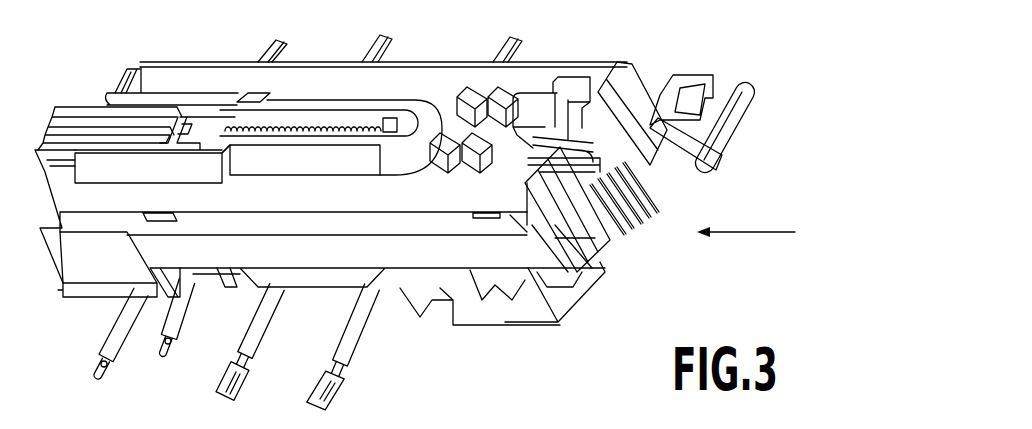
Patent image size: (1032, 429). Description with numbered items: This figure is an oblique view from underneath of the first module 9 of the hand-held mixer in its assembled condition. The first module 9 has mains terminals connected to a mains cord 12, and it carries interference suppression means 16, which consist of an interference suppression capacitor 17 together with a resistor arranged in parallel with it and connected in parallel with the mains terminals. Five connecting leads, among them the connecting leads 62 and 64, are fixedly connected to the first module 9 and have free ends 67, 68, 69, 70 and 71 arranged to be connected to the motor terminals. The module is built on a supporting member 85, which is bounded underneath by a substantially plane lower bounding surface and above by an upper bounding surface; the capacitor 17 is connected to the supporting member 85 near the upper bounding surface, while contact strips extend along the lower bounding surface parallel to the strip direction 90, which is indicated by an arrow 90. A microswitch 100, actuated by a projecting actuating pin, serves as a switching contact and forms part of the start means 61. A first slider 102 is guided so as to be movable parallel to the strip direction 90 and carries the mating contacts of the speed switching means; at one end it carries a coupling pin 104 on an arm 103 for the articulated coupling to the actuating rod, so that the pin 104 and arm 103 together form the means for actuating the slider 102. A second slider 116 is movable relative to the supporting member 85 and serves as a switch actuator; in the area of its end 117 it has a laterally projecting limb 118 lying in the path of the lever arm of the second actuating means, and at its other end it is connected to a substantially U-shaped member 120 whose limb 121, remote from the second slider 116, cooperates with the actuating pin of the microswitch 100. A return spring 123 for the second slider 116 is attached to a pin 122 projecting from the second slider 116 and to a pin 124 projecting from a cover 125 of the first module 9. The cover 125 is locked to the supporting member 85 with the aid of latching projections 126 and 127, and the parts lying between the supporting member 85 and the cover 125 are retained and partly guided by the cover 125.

The first module 9 is at (688, 278).
The mains cord 12 is at (83, 378).
The interference suppression means 16 is at (548, 330).
The interference suppression capacitor 17 is at (460, 310).
The start means 61 is at (88, 97).
The connecting lead 62 is at (363, 323).
The connecting lead 64 is at (268, 320).
The free end 67 is at (341, 386).
The free end 68 is at (500, 50).
The free end 69 is at (250, 380).
The free end 70 is at (368, 45).
The free end 71 is at (260, 50).
The supporting member 85 is at (320, 277).
The strip direction 90 is at (757, 232).
The microswitch 100 is at (97, 273).
The first slider 102 is at (535, 102).
The arm 103 is at (536, 166).
The coupling pin 104 is at (620, 98).
The second slider 116 is at (648, 215).
The end 117 is at (618, 250).
The limb 118 is at (530, 177).
The U-shaped member 120 is at (155, 120).
The limb 121 is at (46, 133).
The pin 122 is at (201, 150).
The return spring 123 is at (280, 125).
The pin 124 is at (385, 115).
The cover 125 is at (621, 67).
The latching projection 126 is at (192, 295).
The latching projection 127 is at (518, 282).